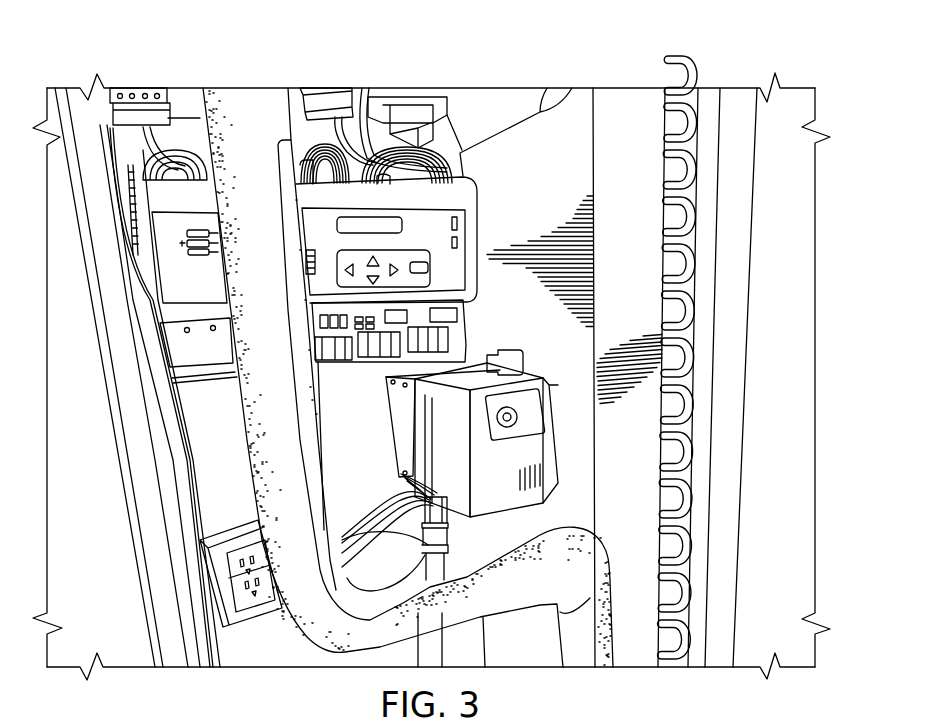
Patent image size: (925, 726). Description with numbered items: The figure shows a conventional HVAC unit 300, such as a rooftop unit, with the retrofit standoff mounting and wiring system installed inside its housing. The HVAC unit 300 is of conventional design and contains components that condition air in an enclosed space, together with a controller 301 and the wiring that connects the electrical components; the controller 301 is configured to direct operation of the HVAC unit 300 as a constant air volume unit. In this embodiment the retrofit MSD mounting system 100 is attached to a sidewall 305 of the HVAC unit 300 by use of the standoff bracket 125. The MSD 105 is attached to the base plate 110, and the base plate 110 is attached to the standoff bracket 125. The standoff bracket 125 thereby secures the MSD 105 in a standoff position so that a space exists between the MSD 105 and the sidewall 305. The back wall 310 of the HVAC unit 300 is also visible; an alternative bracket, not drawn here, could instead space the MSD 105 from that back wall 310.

The retrofit MSD mounting system 100 is at (499, 485).
The MSD 105 is at (558, 438).
The base plate 110 is at (388, 425).
The standoff bracket 125 is at (507, 360).
The HVAC unit 300 is at (153, 62).
The controller 301 is at (480, 228).
The sidewall 305 is at (580, 93).
The back wall 310 is at (376, 464).